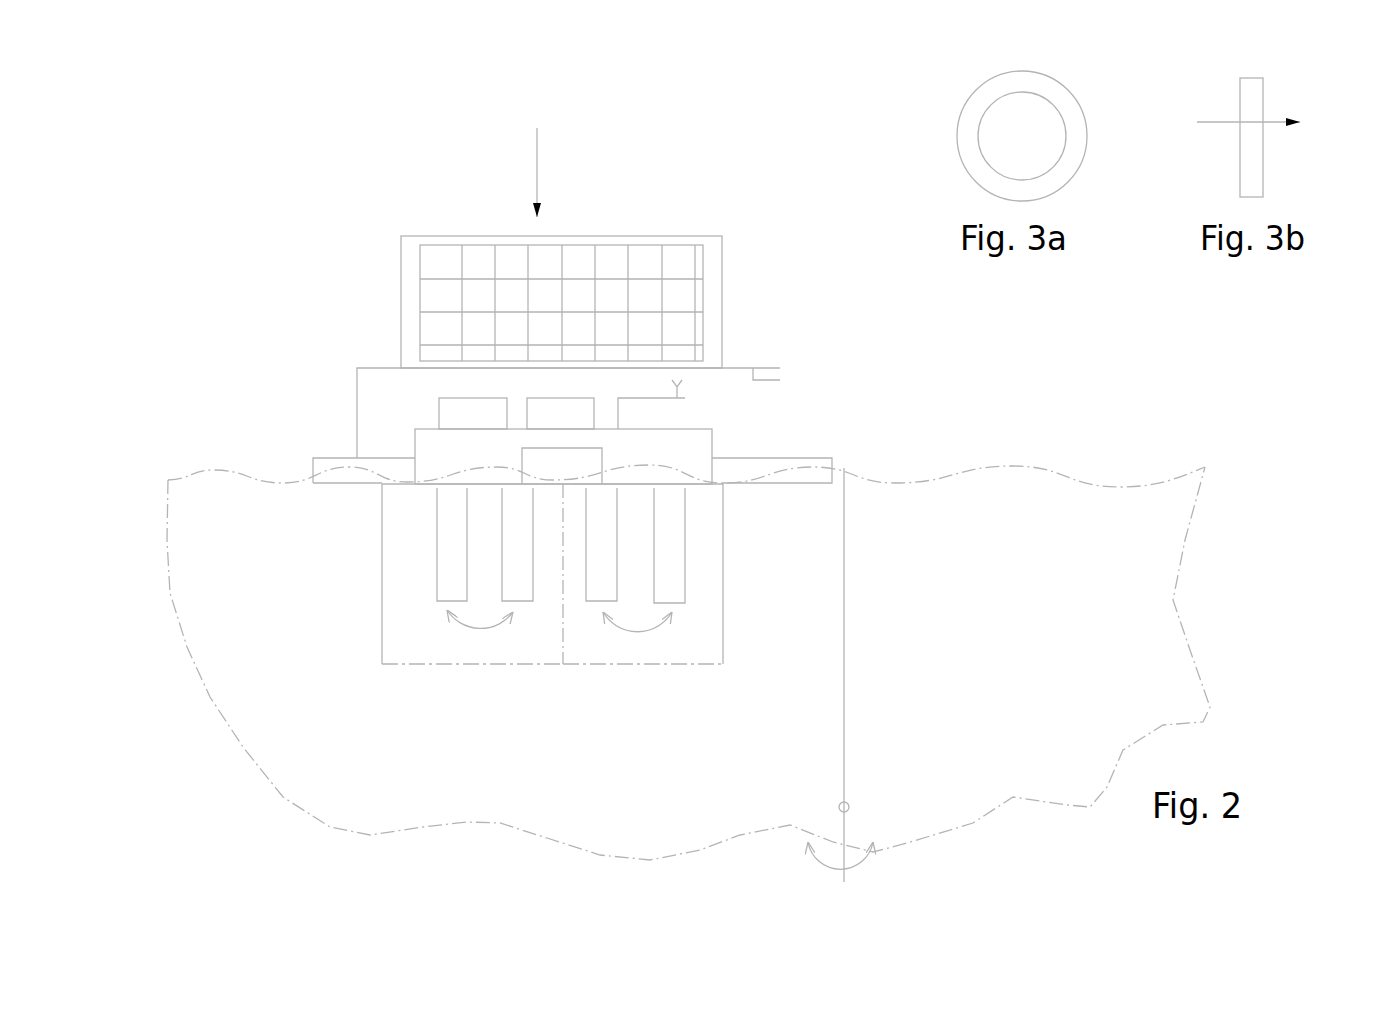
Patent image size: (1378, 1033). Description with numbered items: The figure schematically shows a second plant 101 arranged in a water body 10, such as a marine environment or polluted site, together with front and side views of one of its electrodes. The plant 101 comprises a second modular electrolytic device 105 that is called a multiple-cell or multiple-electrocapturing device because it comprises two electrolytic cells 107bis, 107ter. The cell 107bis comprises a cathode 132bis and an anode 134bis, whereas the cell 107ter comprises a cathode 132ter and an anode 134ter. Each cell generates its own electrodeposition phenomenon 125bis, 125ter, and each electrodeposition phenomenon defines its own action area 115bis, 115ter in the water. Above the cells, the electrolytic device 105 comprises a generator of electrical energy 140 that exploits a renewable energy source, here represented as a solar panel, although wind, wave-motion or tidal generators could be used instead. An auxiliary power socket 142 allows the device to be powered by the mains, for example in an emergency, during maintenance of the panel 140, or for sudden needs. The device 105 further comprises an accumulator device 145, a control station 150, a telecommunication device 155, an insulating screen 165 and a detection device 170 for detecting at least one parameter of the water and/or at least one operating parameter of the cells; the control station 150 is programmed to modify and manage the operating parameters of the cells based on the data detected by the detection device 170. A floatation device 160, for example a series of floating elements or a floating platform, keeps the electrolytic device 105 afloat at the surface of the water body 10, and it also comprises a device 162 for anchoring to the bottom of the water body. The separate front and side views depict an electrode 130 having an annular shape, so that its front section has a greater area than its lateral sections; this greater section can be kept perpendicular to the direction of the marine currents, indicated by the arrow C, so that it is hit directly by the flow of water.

In FIG. 2, the water body 10 is at (1080, 512).
In FIG. 2, the second plant 101 is at (563, 277).
In FIG. 2, the second modular electrolytic device 105 is at (539, 162).
In FIG. 2, the generator of electrical energy 140 is at (403, 273).
In FIG. 2, the auxiliary power socket 142 is at (775, 373).
In FIG. 2, the insulating screen 165 is at (357, 385).
In FIG. 2, the accumulator device 145 is at (473, 413).
In FIG. 2, the control station 150 is at (560, 413).
In FIG. 2, the telecommunication device 155 is at (651, 404).
In FIG. 2, the detection device 170 is at (562, 466).
In FIG. 2, the floatation device 160 is at (313, 470).
In FIG. 2, the electrolytic cell 107bis is at (406, 627).
In FIG. 2, the electrolytic cell 107ter is at (690, 627).
In FIG. 2, the action area 115bis is at (382, 652).
In FIG. 2, the action area 115ter is at (723, 577).
In FIG. 2, the cathode 132bis is at (446, 563).
In FIG. 2, the anode 134bis is at (517, 582).
In FIG. 2, the cathode 132ter is at (598, 576).
In FIG. 2, the anode 134ter is at (667, 583).
In FIG. 2, the electrodeposition phenomenon 125bis is at (468, 638).
In FIG. 2, the electrodeposition phenomenon 125ter is at (652, 643).
In FIG. 2, the device for anchoring to the bottom of the water body 162 is at (851, 805).
In FIG. 3A, the electrode 130 is at (978, 167).
In FIG. 3B, the electrode 130 is at (1253, 135).